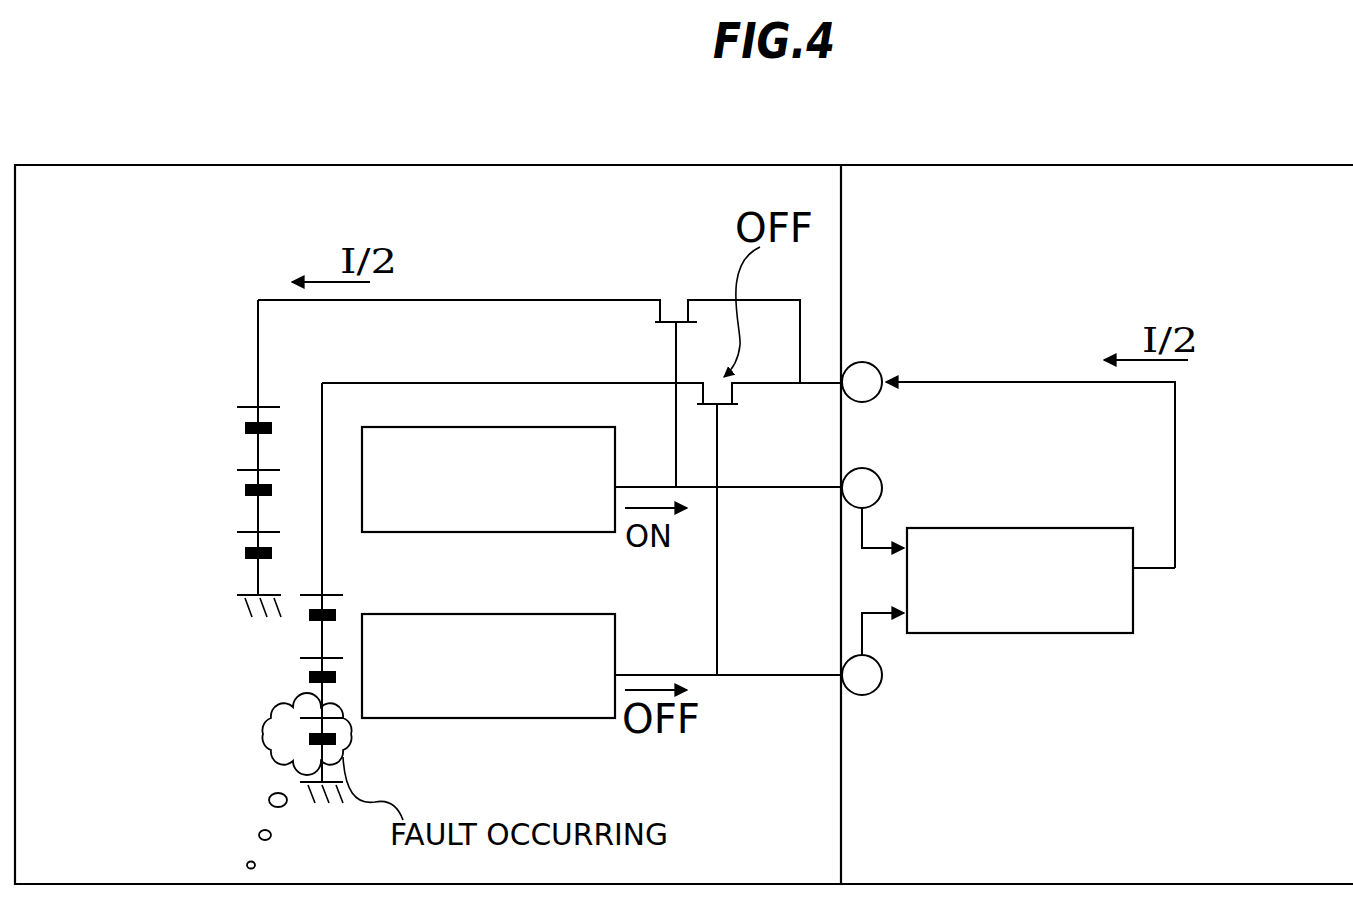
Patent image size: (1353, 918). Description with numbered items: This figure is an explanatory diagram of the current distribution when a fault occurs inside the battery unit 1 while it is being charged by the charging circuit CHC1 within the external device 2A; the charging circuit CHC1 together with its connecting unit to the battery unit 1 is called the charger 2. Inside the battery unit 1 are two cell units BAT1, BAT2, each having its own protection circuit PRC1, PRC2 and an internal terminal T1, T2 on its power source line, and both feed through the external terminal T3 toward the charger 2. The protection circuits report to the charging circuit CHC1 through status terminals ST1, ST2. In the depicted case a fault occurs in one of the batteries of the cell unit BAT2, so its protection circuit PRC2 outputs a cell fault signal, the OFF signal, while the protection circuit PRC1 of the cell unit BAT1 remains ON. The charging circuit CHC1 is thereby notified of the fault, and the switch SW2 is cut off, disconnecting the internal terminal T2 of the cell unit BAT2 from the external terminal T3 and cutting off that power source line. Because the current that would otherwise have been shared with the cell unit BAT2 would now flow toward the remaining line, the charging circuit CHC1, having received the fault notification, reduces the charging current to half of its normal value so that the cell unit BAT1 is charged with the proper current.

The battery unit 1 is at (458, 165).
The charger 2 is at (930, 165).
The external device 2A is at (1265, 240).
The internal terminal T1 is at (253, 343).
The internal terminal T2 is at (322, 517).
The external terminal T3 is at (865, 362).
The status terminal ST1 is at (867, 473).
The status terminal ST2 is at (870, 690).
The cell unit BAT1 is at (192, 430).
The cell unit BAT2 is at (233, 706).
The protection circuit PRC1 is at (493, 532).
The protection circuit PRC2 is at (477, 718).
The switch SW2 is at (722, 406).
The charging circuit CHC1 is at (1043, 633).